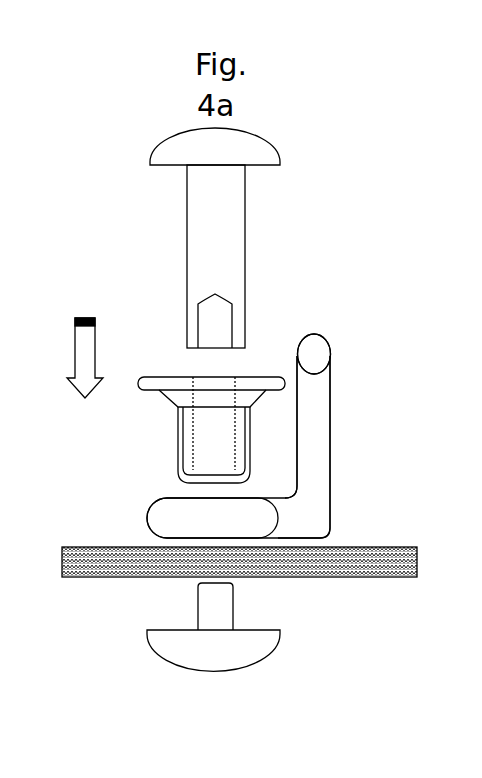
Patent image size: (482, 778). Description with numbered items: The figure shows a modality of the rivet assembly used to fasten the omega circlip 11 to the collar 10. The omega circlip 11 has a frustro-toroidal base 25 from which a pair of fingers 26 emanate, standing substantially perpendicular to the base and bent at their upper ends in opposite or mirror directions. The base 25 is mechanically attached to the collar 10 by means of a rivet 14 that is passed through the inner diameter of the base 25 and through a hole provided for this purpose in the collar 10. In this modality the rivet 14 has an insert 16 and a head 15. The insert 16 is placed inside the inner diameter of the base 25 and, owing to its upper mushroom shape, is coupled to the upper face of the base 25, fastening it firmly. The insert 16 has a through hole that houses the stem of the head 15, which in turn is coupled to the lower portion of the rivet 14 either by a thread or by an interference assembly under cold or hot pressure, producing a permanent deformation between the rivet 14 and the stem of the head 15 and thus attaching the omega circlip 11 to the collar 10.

The collar 10 is at (341, 585).
The omega circlip 11 is at (348, 383).
The rivet 14 is at (178, 647).
The head 15 is at (230, 199).
The insert 16 is at (186, 431).
The base 25 is at (150, 521).
The fingers 26 is at (314, 457).